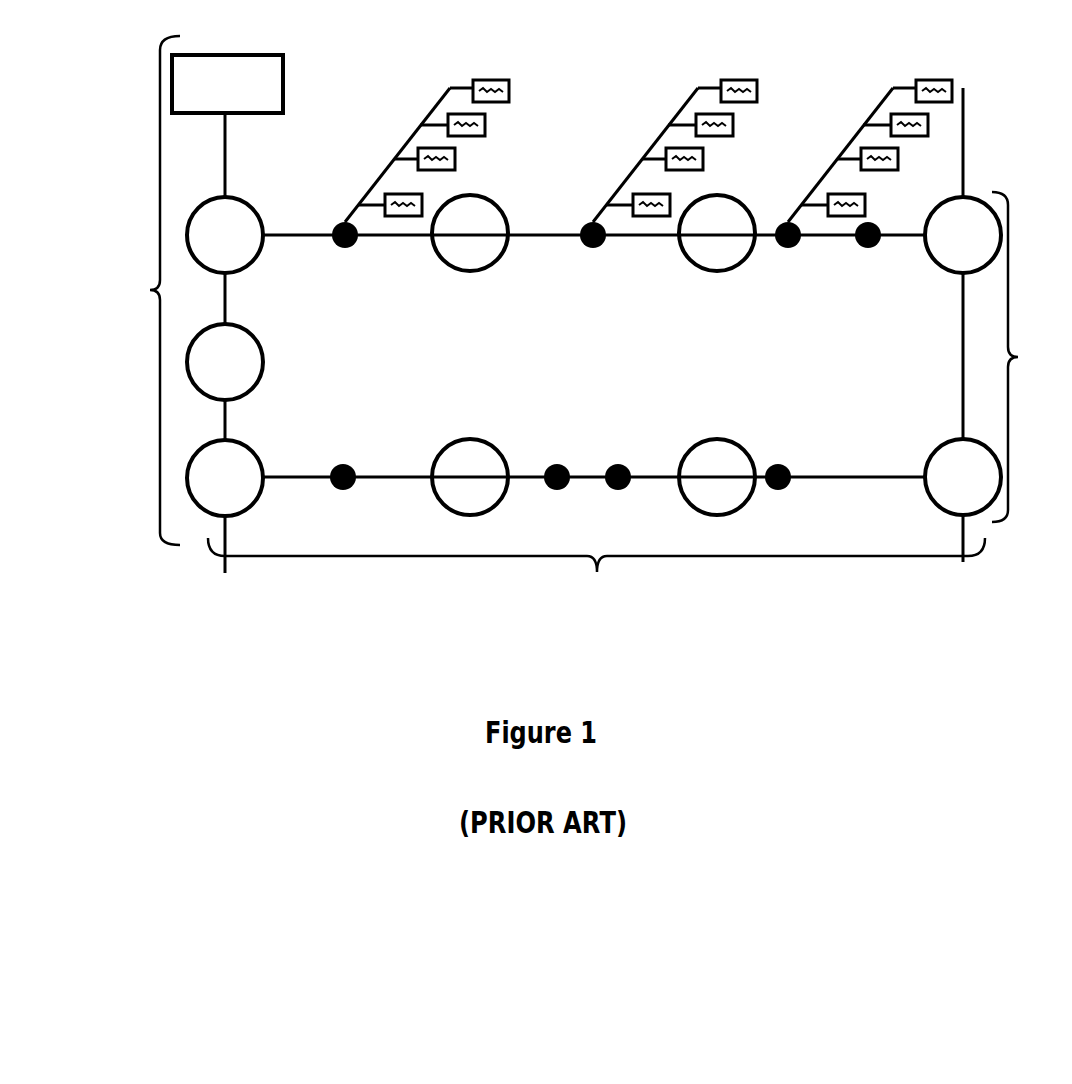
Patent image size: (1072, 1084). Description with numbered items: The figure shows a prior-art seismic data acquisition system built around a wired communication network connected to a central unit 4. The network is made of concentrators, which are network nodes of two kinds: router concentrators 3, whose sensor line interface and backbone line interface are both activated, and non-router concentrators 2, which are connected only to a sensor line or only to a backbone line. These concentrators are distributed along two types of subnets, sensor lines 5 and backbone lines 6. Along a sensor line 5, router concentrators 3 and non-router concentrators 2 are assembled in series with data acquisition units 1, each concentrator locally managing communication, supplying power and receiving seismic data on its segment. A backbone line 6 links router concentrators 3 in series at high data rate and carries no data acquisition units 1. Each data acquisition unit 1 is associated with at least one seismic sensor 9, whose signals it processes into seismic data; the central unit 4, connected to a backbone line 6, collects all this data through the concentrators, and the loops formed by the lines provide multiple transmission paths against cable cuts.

The data acquisition unit 1 is at (597, 250).
The non-router concentrator 2 is at (474, 362).
The router concentrator 3 is at (594, 367).
The central unit 4 is at (244, 84).
The sensor line 5 is at (596, 576).
The backbone line 6 is at (568, 290).
The seismic sensor 9 is at (495, 131).